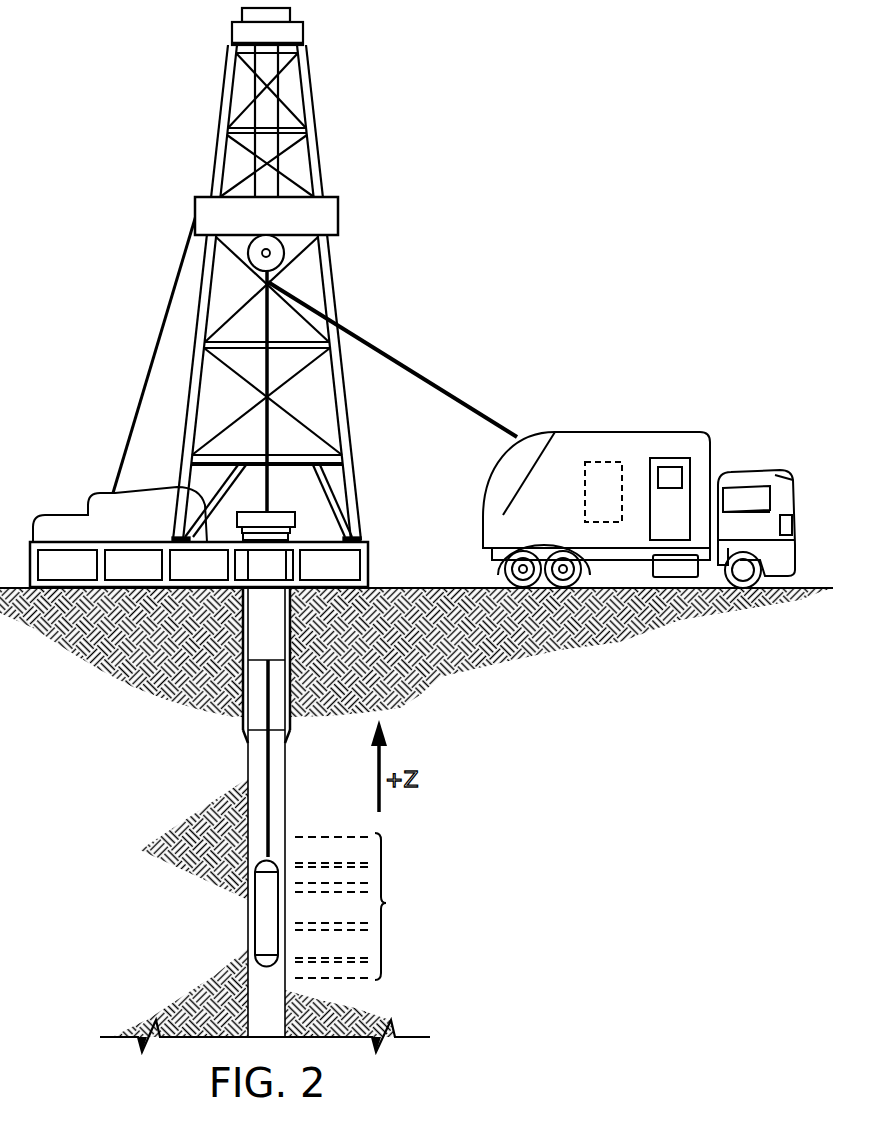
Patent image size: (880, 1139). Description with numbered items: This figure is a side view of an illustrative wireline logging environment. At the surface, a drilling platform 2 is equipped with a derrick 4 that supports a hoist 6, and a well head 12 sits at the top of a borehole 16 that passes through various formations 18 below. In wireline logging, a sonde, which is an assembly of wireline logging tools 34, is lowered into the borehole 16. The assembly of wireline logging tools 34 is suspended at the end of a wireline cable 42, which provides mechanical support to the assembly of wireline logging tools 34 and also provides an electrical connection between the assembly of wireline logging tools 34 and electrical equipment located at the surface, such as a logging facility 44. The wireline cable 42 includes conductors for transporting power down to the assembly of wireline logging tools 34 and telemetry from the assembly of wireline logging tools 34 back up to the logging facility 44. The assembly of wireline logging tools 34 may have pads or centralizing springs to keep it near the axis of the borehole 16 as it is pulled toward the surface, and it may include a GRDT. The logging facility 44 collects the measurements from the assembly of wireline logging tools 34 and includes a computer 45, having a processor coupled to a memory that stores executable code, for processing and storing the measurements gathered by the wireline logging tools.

The drilling platform 2 is at (368, 563).
The derrick 4 is at (358, 492).
The hoist 6 is at (261, 262).
The well head 12 is at (251, 510).
The borehole 16 is at (286, 788).
The formations 18 is at (363, 906).
The assembly of wireline logging tools 34 is at (255, 912).
The wireline cable 42 is at (402, 362).
The logging facility 44 is at (673, 432).
The computer 45 is at (585, 490).